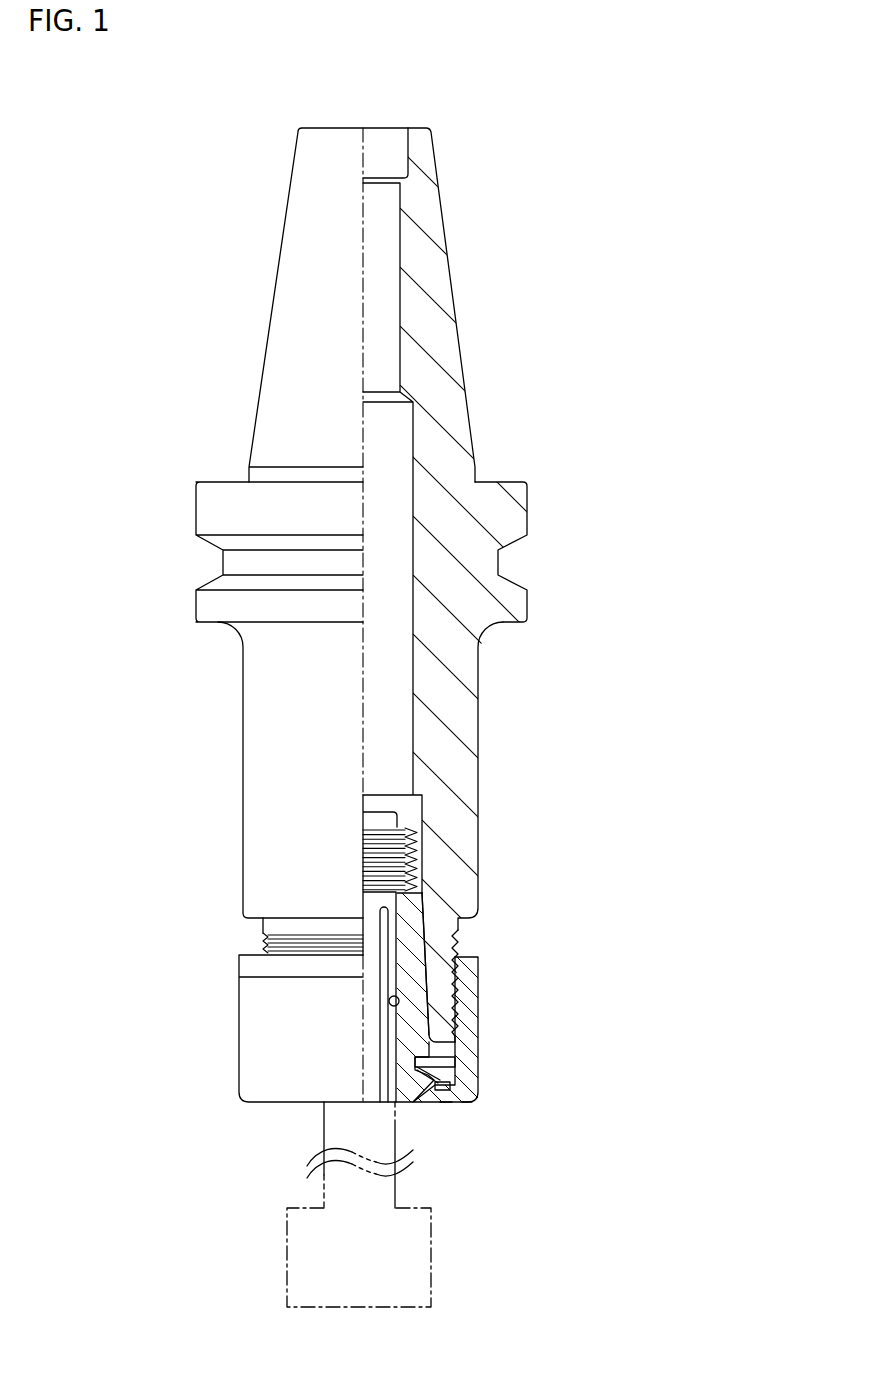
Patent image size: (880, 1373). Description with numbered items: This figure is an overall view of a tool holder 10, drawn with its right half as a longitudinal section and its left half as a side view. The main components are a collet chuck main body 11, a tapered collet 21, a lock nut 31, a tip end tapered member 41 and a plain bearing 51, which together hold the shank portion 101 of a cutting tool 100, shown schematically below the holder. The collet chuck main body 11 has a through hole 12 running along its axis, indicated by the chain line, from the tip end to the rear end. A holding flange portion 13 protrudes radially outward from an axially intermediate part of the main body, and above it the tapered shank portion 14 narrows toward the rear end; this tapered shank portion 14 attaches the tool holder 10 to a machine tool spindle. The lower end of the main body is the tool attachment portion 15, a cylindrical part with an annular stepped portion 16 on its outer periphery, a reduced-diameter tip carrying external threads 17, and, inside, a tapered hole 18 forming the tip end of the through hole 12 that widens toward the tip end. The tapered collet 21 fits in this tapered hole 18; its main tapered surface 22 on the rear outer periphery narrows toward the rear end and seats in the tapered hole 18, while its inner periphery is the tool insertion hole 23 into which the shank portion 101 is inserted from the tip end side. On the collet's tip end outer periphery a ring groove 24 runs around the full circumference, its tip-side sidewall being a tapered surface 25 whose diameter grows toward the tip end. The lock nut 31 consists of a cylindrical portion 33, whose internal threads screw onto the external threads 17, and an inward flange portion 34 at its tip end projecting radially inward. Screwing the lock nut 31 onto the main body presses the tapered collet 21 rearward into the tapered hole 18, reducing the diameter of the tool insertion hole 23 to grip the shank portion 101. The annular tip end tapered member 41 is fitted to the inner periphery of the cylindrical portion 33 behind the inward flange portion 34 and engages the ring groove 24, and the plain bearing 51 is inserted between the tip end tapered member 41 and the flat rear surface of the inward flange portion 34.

The tool holder 10 is at (189, 181).
The collet chuck main body 11 is at (231, 712).
The through hole 12 is at (400, 310).
The holding flange portion 13 is at (196, 513).
The tapered shank portion 14 is at (273, 292).
The tool attachment portion 15 is at (252, 954).
The annular stepped portion 16 is at (252, 932).
The external threads 17 is at (451, 941).
The tapered hole 18 is at (413, 912).
The tapered collet 21 is at (439, 935).
The main tapered surface 22 is at (427, 977).
The tool insertion hole 23 is at (433, 1033).
The ring groove 24 is at (417, 1062).
The tapered surface 25 is at (415, 1072).
The lock nut 31 is at (492, 1104).
The cylindrical portion 33 is at (467, 1005).
The inward flange portion 34 is at (445, 1103).
The tip end tapered member 41 is at (426, 1117).
The plain bearing 51 is at (467, 1107).
The cutting tool 100 is at (287, 1253).
The shank portion 101 is at (323, 1132).